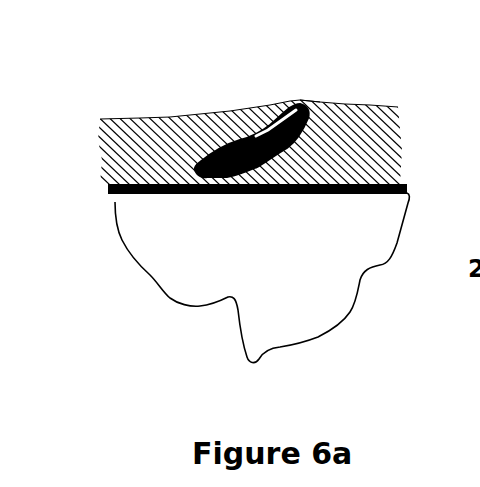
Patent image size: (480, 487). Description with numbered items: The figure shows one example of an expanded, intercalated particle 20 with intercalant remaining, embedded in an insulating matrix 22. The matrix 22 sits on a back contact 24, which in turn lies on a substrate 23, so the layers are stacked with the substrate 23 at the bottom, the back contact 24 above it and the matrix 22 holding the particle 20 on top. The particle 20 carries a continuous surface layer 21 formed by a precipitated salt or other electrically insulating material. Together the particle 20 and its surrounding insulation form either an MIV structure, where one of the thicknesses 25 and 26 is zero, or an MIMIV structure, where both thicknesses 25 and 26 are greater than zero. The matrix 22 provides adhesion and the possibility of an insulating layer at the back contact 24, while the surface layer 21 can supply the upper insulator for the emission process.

The intercalated particle 20 is at (300, 107).
The continuous surface layer 21 is at (248, 123).
The insulating matrix 22 is at (135, 150).
The substrate 23 is at (337, 263).
The back contact 24 is at (108, 193).
The thickness 25 is at (312, 101).
The thickness 26 is at (413, 178).